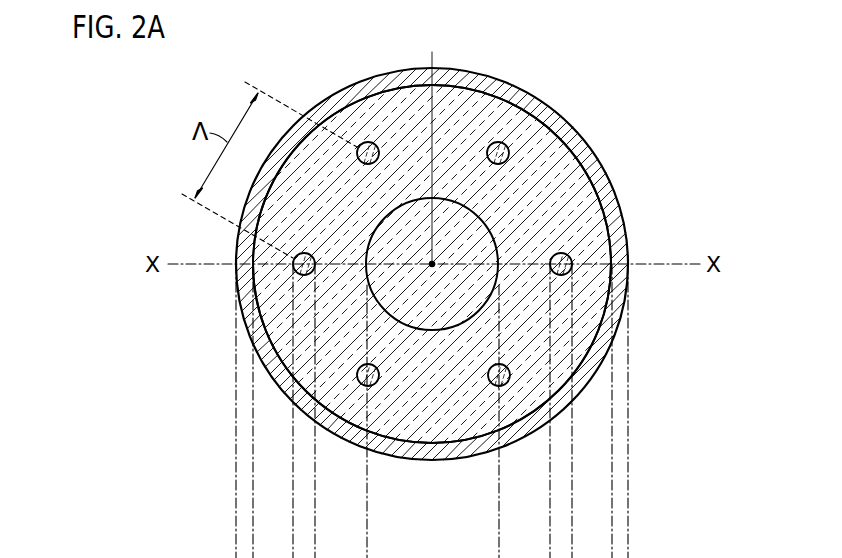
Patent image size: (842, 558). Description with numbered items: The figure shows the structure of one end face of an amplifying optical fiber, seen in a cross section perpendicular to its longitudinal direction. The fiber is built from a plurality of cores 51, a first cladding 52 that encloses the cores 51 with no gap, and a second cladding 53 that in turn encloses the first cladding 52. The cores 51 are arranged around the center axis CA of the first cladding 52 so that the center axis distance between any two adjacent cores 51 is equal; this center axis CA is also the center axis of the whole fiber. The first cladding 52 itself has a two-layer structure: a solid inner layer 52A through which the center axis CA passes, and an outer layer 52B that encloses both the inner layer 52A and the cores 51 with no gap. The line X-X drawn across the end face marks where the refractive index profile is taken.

The cores 51 is at (367, 141).
The first cladding 52 is at (700, 130).
The inner layer 52A is at (468, 250).
The outer layer 52B is at (560, 185).
The second cladding 53 is at (600, 345).
The center axis CA is at (435, 147).